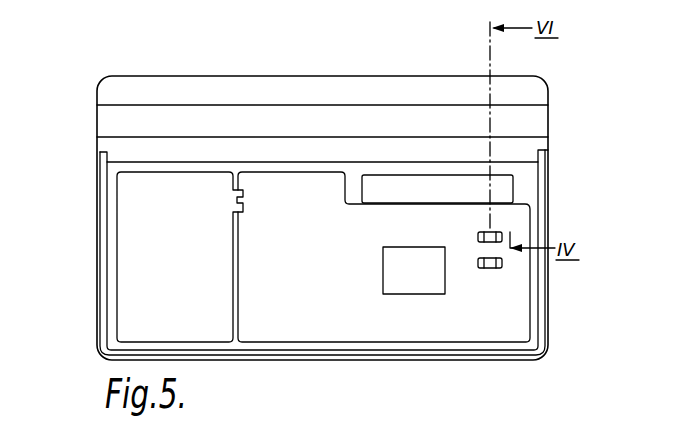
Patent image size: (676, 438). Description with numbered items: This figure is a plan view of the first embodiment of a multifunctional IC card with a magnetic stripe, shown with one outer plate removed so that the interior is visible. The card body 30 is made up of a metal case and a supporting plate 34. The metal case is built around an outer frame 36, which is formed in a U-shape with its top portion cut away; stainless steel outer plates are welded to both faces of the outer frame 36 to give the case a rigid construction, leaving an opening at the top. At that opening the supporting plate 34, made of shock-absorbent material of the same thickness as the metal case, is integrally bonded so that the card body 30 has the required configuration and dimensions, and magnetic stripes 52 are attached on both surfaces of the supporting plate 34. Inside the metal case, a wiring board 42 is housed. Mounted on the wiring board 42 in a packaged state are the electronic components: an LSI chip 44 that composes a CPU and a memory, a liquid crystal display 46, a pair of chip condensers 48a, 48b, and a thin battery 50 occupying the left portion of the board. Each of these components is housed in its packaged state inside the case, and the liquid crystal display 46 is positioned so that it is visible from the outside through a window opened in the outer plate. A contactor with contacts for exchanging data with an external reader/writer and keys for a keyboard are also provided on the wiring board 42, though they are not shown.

The card body 30 is at (95, 157).
The supporting plate 34 is at (245, 84).
The magnetic stripes 52 is at (532, 122).
The outer frame 36 is at (100, 222).
The thin battery 50 is at (127, 264).
The wiring board 42 is at (300, 323).
The liquid crystal display 46 is at (503, 193).
The LSI chip 44 is at (418, 285).
The chip condenser 48a is at (498, 228).
The chip condenser 48b is at (503, 267).